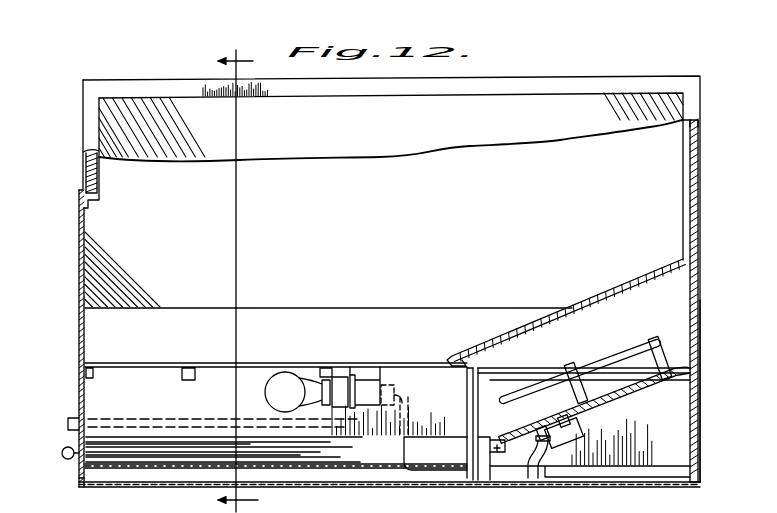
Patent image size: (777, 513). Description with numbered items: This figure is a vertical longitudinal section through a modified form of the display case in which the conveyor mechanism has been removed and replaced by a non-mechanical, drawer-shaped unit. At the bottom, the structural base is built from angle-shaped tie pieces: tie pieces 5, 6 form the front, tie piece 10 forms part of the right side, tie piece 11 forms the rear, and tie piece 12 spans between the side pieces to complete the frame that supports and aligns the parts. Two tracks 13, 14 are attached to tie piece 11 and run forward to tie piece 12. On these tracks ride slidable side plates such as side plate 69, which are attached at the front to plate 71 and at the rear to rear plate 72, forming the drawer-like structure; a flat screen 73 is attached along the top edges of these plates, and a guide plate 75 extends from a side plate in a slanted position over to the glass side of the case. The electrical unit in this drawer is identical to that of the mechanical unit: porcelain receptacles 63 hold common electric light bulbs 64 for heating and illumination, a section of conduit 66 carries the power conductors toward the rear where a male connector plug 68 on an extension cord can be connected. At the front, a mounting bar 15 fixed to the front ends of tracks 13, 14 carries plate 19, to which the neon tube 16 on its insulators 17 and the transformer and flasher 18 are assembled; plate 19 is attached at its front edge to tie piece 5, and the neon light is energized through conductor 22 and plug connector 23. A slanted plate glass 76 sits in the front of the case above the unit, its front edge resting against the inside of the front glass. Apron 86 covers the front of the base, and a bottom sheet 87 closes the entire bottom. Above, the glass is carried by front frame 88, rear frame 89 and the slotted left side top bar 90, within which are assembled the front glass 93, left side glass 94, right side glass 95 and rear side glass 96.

The tie piece 5 is at (703, 374).
The tie piece 6 is at (703, 470).
The tie piece 10 is at (323, 477).
The tie piece 11 is at (87, 483).
The tie piece 12 is at (463, 487).
The track 13 is at (249, 273).
The track 14 is at (479, 478).
The mounting bar 15 is at (497, 445).
The neon tube 16 is at (606, 357).
The insulators 17 is at (593, 405).
The transformer and flasher 18 is at (558, 422).
The plate 19 is at (642, 385).
The conductor 22 is at (437, 478).
The plug connector 23 is at (403, 397).
The porcelain receptacles 63 is at (336, 384).
The electric light bulb 64 is at (297, 392).
The conduit 66 is at (73, 420).
The male connector plug 68 is at (365, 383).
The side plate 69 is at (224, 431).
The plate 71 is at (479, 420).
The rear plate 72 is at (80, 248).
The flat screen 73 is at (258, 358).
The guide plate 75 is at (328, 330).
The slanted plate glass 76 is at (583, 300).
The apron 86 is at (703, 435).
The bottom sheet 87 is at (151, 480).
The front frame 88 is at (698, 113).
The rear frame 89 is at (84, 114).
The left side top bar 90 is at (522, 82).
The front glass 93 is at (699, 160).
The left side glass 94 is at (391, 127).
The right side glass 95 is at (391, 171).
The rear side glass 96 is at (85, 172).